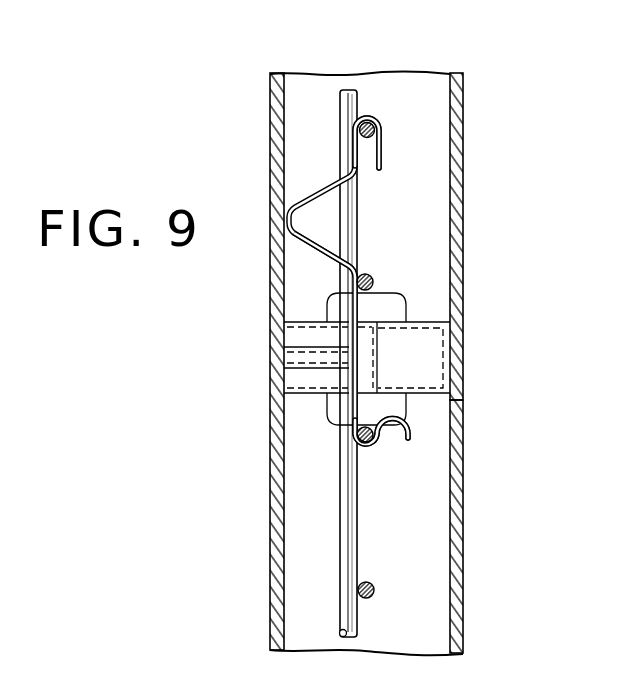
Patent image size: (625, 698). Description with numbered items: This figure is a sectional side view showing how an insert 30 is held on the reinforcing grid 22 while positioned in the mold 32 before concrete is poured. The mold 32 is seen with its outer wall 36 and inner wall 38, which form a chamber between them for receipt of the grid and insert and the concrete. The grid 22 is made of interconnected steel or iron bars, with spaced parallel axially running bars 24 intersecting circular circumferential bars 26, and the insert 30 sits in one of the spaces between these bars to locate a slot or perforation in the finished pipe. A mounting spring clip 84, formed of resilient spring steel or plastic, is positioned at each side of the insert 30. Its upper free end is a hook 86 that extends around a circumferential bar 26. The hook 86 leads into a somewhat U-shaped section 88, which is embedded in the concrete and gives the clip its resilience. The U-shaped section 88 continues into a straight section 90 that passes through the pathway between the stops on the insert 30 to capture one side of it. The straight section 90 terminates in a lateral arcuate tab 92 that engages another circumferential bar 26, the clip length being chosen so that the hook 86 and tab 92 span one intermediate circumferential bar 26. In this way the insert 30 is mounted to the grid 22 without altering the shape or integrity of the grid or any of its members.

The grid 22 is at (338, 118).
The axially running bars 24 is at (343, 537).
The circumferential bars 26 is at (375, 593).
The insert 30 is at (419, 323).
The mold 32 is at (463, 142).
The outer wall 36 is at (272, 597).
The inner wall 38 is at (462, 592).
The mounting spring clip 84 is at (307, 255).
The hook 86 is at (383, 152).
The U-shaped section 88 is at (323, 182).
The straight section 90 is at (356, 306).
The lateral arcuate tab 92 is at (380, 443).